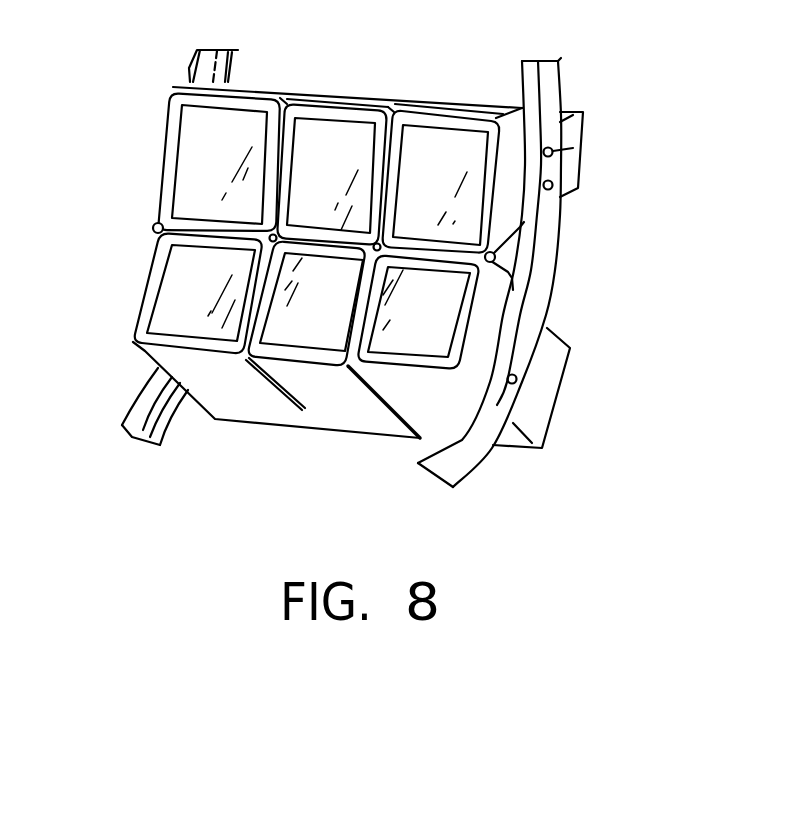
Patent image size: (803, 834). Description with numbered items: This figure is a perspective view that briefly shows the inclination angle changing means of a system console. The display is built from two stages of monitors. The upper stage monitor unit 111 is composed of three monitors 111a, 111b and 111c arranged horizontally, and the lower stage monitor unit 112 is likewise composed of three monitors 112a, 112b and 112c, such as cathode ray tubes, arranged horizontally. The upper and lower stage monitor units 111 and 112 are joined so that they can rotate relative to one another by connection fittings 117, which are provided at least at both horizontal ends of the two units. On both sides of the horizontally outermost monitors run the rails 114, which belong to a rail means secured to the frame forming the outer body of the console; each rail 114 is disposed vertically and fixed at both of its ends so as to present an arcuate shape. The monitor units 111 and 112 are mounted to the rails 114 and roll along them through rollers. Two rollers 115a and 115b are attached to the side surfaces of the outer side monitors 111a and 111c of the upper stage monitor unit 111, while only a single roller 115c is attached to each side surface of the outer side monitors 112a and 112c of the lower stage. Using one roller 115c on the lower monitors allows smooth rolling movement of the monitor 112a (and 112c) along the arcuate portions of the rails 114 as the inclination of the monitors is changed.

The upper stage monitor unit 111 is at (167, 148).
The monitor 111a is at (235, 118).
The monitor 111b is at (340, 130).
The monitor 111c is at (448, 130).
The lower stage monitor unit 112 is at (147, 287).
The monitor 112a is at (203, 333).
The monitor 112b is at (313, 340).
The monitor 112c is at (405, 350).
The rail 114 is at (188, 68).
The roller 115a is at (583, 141).
The roller 115b is at (553, 187).
The roller 115c is at (517, 383).
The connection fitting 117 is at (154, 223).